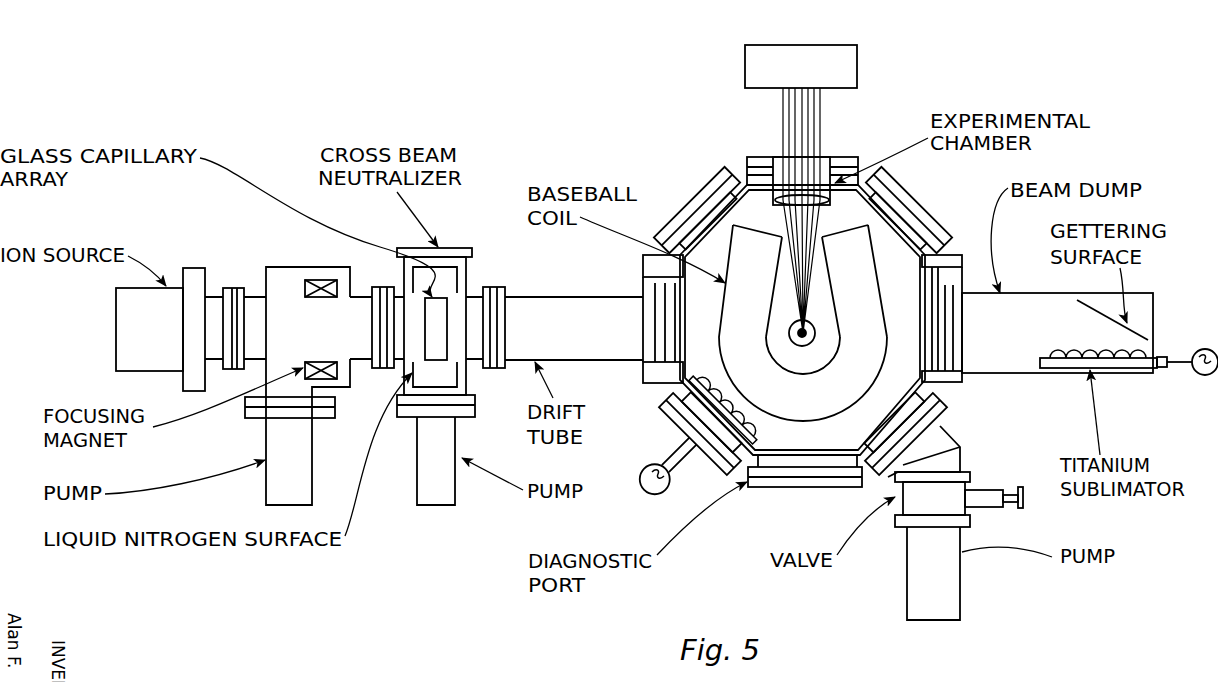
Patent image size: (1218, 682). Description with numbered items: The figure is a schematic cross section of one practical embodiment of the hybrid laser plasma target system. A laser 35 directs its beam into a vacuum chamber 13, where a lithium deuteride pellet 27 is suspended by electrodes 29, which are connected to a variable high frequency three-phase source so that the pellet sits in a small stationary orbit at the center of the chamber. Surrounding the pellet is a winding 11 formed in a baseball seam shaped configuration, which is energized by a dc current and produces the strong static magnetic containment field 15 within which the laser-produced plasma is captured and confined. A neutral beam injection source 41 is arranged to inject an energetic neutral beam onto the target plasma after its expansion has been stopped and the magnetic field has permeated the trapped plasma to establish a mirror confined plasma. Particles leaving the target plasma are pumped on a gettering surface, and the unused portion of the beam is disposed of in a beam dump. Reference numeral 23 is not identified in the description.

The winding 11 is at (718, 313).
The vacuum chamber 13 is at (905, 373).
The magnetic containment field 15 is at (790, 319).
The inner coil region 23 is at (813, 350).
The lithium deuteride pellet 27 is at (814, 331).
The electrodes 29 is at (850, 222).
The laser 35 is at (857, 65).
The neutral beam injection source 41 is at (112, 330).